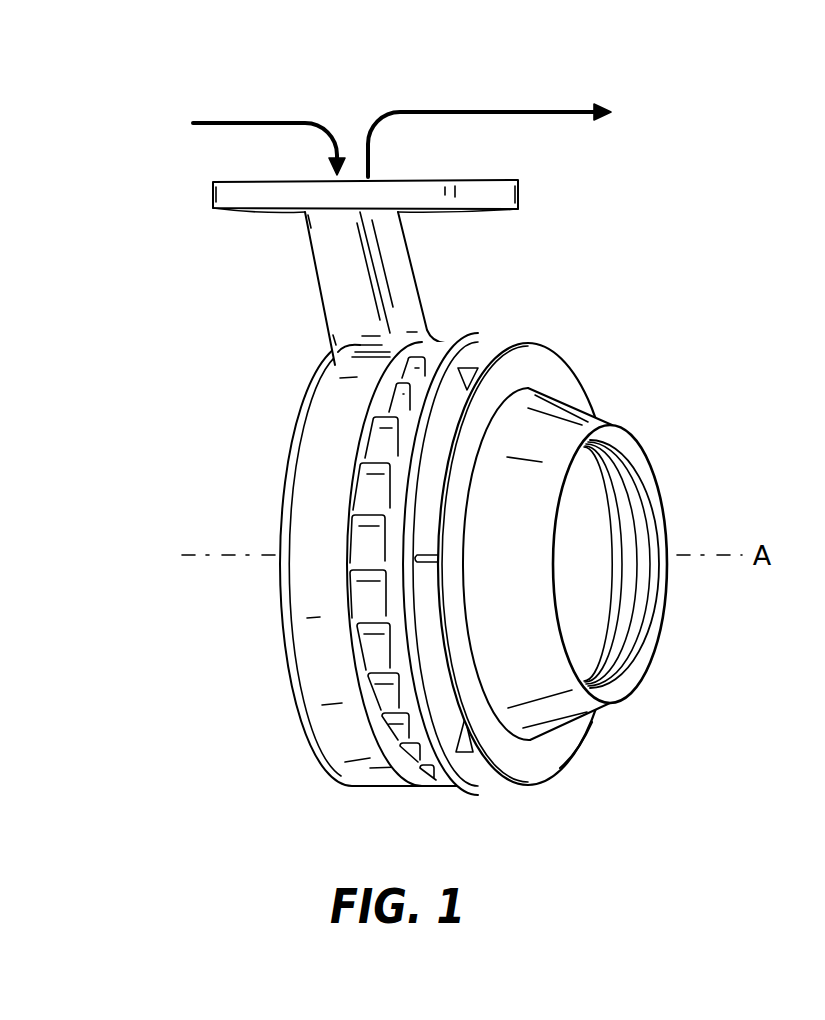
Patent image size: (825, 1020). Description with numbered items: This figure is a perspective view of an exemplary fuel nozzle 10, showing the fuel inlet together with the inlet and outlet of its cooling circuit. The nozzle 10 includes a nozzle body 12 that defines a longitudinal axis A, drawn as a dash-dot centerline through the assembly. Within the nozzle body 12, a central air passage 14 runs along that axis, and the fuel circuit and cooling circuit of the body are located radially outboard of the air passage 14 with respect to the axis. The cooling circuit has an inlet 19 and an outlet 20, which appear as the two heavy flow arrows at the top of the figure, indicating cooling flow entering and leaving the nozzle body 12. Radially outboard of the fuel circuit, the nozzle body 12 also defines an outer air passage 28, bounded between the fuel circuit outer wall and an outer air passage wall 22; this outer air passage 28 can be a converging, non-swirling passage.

The nozzle 10 is at (204, 410).
The nozzle body 12 is at (551, 344).
The air passage 14 is at (676, 500).
The inlet 19 is at (269, 132).
The outlet 20 is at (489, 127).
The outer air passage wall 22 is at (583, 747).
The outer air passage 28 is at (497, 781).